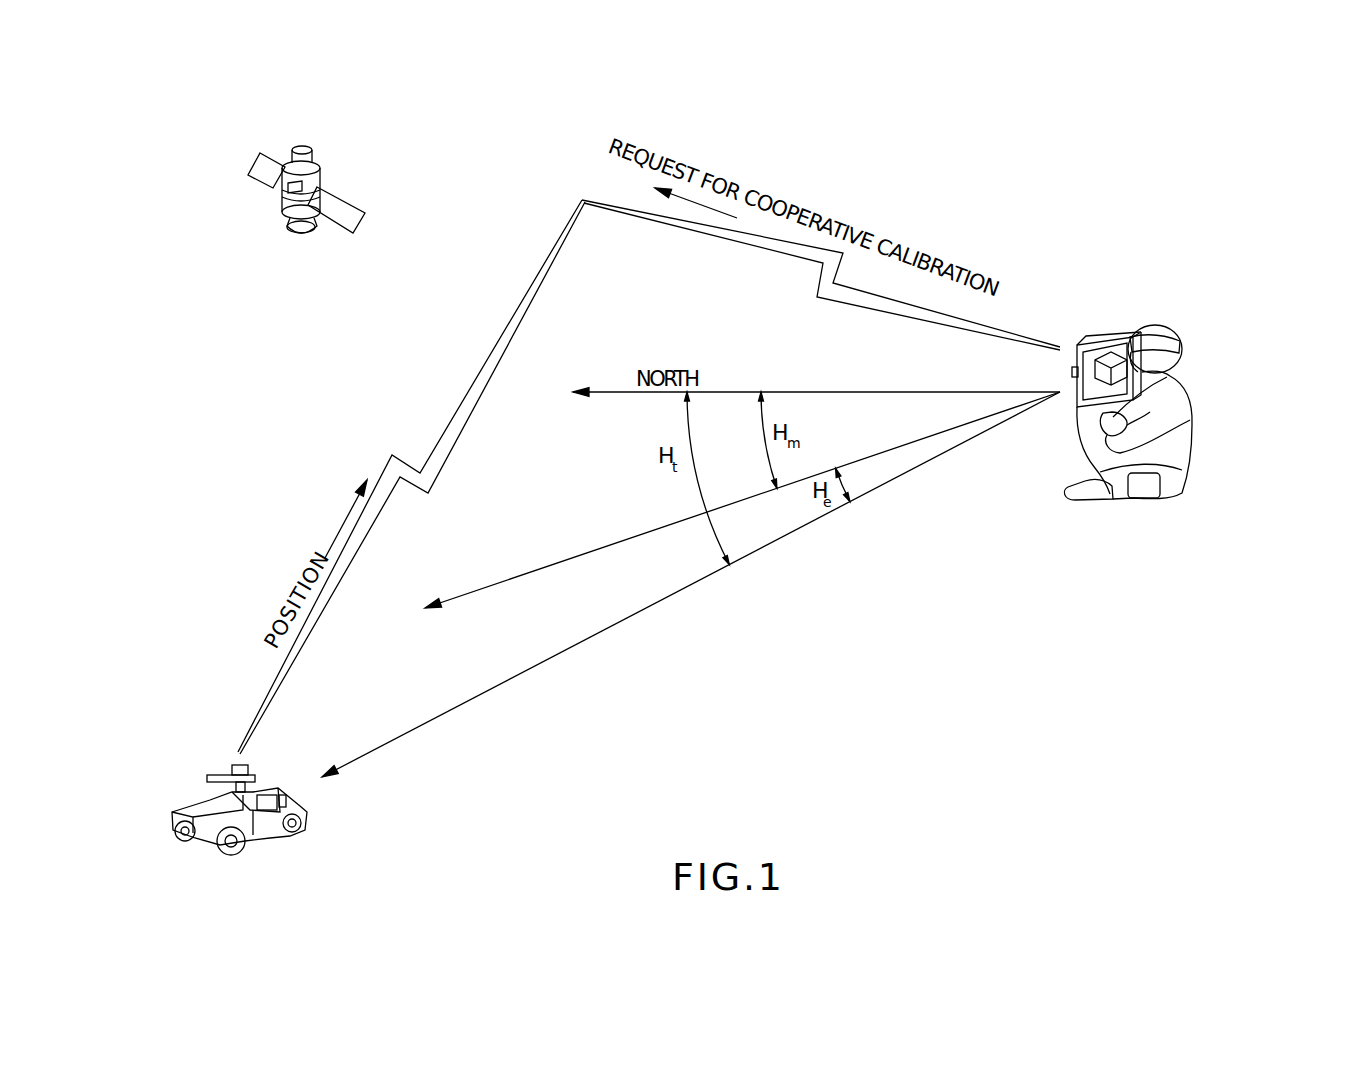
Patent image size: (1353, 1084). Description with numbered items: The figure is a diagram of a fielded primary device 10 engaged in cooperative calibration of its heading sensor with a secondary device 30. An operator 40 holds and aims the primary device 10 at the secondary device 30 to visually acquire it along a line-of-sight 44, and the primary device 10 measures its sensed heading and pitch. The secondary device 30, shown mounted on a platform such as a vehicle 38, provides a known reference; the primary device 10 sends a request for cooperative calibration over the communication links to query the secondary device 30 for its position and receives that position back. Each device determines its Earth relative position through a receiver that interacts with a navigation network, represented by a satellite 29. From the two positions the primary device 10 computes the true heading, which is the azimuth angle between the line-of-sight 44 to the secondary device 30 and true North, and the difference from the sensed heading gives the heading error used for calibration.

The primary device 10 is at (1081, 332).
The satellite 29 is at (252, 158).
The secondary device 30 is at (221, 770).
The vehicle 38 is at (168, 827).
The operator 40 is at (1200, 435).
The line-of-sight 44 is at (545, 662).